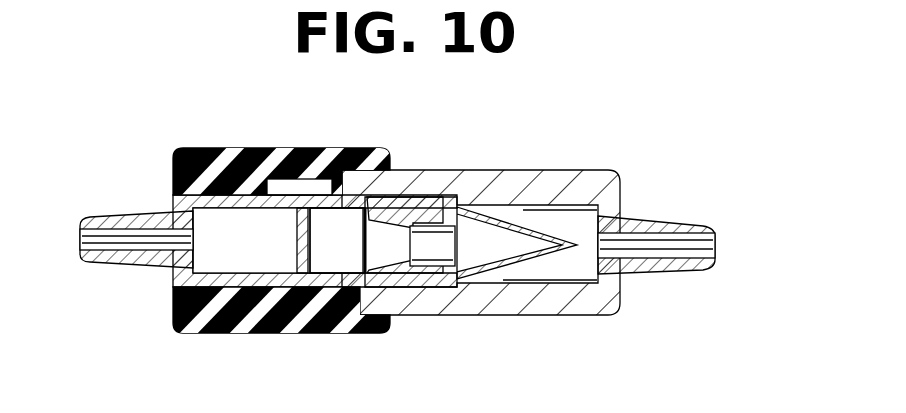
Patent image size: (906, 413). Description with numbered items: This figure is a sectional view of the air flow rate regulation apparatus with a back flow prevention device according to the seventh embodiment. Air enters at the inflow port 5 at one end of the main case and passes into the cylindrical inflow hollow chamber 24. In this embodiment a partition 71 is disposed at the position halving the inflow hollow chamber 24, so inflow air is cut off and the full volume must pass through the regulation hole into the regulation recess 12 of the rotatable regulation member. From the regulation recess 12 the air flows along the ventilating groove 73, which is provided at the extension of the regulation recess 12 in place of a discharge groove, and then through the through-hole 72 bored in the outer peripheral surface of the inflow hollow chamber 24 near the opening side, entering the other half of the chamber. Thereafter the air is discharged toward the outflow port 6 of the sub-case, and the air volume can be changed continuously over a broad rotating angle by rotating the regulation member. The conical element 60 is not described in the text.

The inflow port 5 is at (80, 240).
The outflow port 6 is at (716, 240).
The regulation recess 12 is at (283, 181).
The inflow hollow chamber 24 is at (229, 222).
The conical lens 60 is at (535, 270).
The partition 71 is at (294, 250).
The through-hole 72 is at (336, 240).
The ventilating groove 73 is at (327, 230).